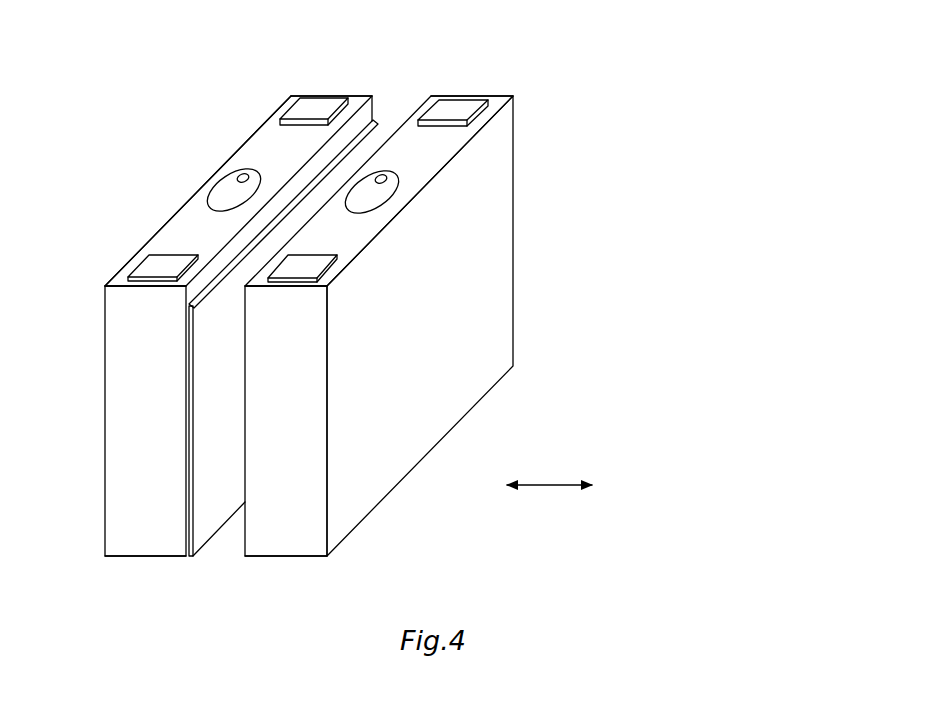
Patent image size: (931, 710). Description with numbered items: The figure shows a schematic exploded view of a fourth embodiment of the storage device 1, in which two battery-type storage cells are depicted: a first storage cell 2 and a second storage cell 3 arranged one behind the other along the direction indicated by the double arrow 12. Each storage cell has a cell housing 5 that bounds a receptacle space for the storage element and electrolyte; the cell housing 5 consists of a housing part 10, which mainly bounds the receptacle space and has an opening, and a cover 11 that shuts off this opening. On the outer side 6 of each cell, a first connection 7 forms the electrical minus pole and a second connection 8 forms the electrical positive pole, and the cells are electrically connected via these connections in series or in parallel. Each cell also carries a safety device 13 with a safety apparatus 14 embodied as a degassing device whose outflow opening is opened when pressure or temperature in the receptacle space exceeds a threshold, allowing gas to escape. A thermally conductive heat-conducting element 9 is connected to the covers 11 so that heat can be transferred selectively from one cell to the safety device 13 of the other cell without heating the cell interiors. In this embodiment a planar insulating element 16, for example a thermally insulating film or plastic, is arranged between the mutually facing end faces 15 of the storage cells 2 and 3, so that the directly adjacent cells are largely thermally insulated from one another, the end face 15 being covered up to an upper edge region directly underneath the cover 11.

The storage device 1 is at (532, 97).
The first storage cell 2 is at (128, 420).
The second storage cell 3 is at (307, 558).
The cell housing 5 is at (120, 545).
The outer side 6 is at (127, 271).
The first connection 7 is at (153, 268).
The second connection 8 is at (320, 105).
The heat-conducting element 9 is at (240, 162).
The housing part 10 is at (543, 297).
The cover 11 is at (270, 135).
The double arrow 12 is at (550, 485).
The safety device 13 is at (213, 185).
The safety apparatus 14 is at (215, 202).
The end face 15 is at (280, 306).
The insulating element 16 is at (375, 138).